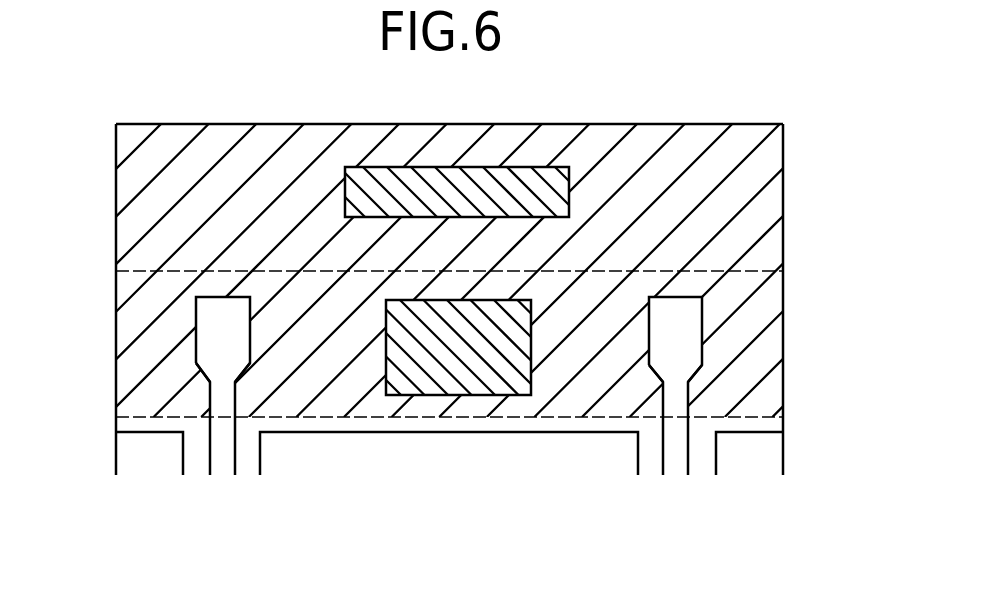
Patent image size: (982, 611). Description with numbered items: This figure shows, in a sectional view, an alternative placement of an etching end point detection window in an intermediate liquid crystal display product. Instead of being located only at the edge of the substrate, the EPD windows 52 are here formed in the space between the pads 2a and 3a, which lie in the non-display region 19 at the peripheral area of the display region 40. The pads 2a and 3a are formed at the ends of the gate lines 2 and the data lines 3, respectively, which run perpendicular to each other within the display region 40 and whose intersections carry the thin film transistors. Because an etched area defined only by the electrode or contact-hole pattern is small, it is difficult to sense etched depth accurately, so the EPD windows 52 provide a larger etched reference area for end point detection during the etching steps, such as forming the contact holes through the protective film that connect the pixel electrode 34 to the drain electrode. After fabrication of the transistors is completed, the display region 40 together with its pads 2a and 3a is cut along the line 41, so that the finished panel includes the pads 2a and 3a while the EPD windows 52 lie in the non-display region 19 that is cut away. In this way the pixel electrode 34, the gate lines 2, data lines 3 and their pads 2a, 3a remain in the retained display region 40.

The non-display region 19 is at (95, 127).
The display region 40 is at (460, 499).
The cutting line 41 is at (757, 271).
The EPD window 52 is at (550, 167).
The pixel electrode 34 is at (170, 462).
The gate line 2 is at (442, 432).
The data line 3 is at (442, 432).
The gate line pad 2a is at (412, 444).
The data line pad 3a is at (195, 365).